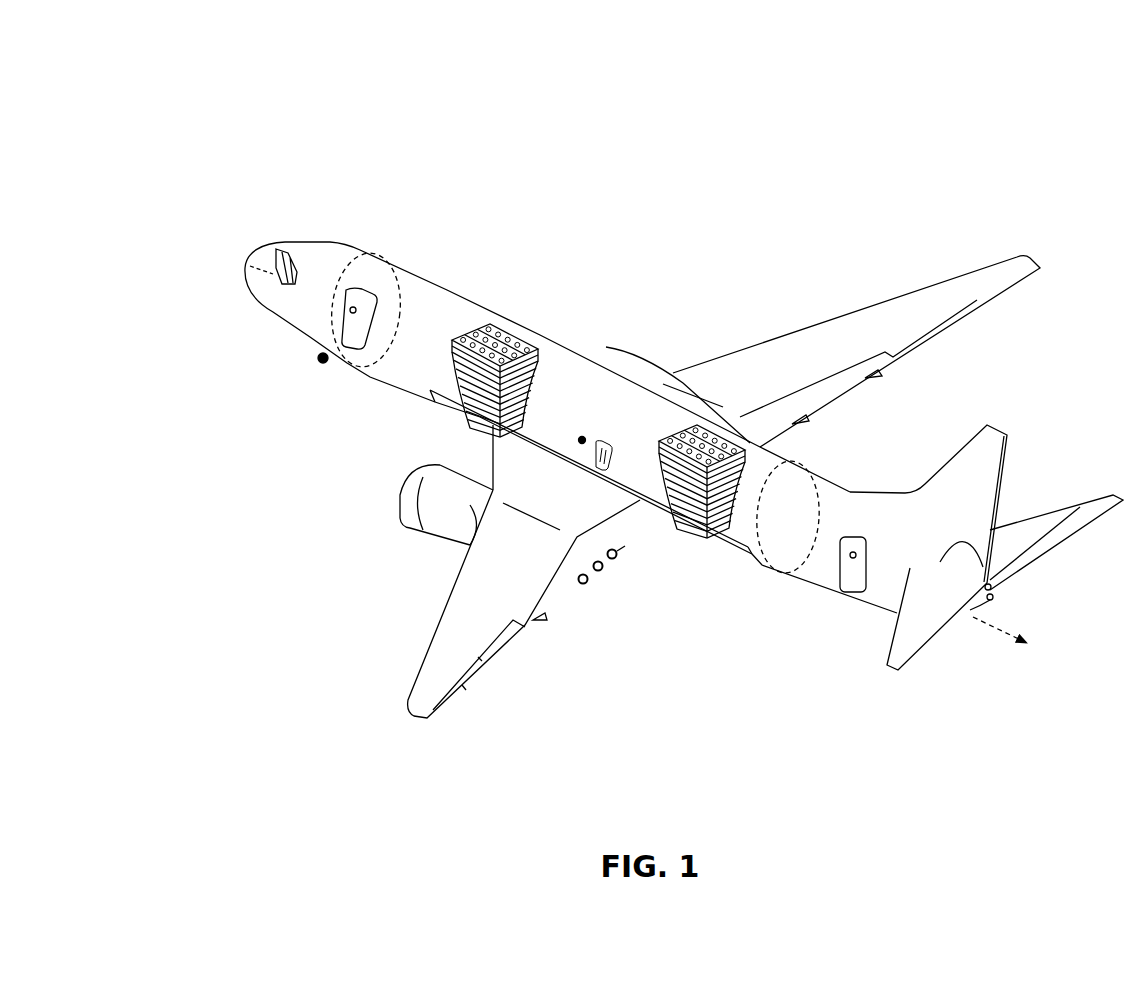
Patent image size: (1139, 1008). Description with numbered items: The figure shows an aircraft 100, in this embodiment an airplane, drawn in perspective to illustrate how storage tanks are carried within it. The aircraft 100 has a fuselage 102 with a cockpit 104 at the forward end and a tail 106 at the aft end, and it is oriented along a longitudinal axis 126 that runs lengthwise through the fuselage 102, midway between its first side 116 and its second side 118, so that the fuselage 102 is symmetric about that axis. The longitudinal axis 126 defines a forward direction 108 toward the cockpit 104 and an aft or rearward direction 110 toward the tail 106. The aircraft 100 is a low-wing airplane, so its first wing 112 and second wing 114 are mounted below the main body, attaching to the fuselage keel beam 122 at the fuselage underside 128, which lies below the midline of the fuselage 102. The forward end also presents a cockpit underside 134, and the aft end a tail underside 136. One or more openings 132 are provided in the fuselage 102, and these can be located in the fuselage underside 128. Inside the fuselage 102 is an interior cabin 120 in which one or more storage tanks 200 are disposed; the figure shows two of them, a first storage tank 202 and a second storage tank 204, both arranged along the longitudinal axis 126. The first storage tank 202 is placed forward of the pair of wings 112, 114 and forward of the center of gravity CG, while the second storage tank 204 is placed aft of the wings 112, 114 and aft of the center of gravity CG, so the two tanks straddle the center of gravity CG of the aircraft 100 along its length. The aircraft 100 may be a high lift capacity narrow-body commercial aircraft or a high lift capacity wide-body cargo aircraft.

The aircraft 100 is at (824, 131).
The fuselage 102 is at (582, 372).
The cockpit 104 is at (328, 253).
The tail 106 is at (990, 437).
The forward direction 108 is at (363, 402).
The aft direction 110 is at (760, 597).
The first wing 112 is at (457, 648).
The second wing 114 is at (853, 332).
The first side 116 is at (740, 552).
The second side 118 is at (793, 462).
The interior cabin 120 is at (548, 407).
The keel beam 122 is at (543, 450).
The longitudinal axis 126 is at (180, 243).
The fuselage underside 128 is at (687, 563).
The openings 132 is at (472, 433).
The cockpit underside 134 is at (267, 320).
The tail underside 136 is at (877, 640).
The storage tanks 200 is at (532, 420).
The first storage tank 202 is at (467, 390).
The second storage tank 204 is at (665, 513).
The center of gravity CG is at (599, 432).